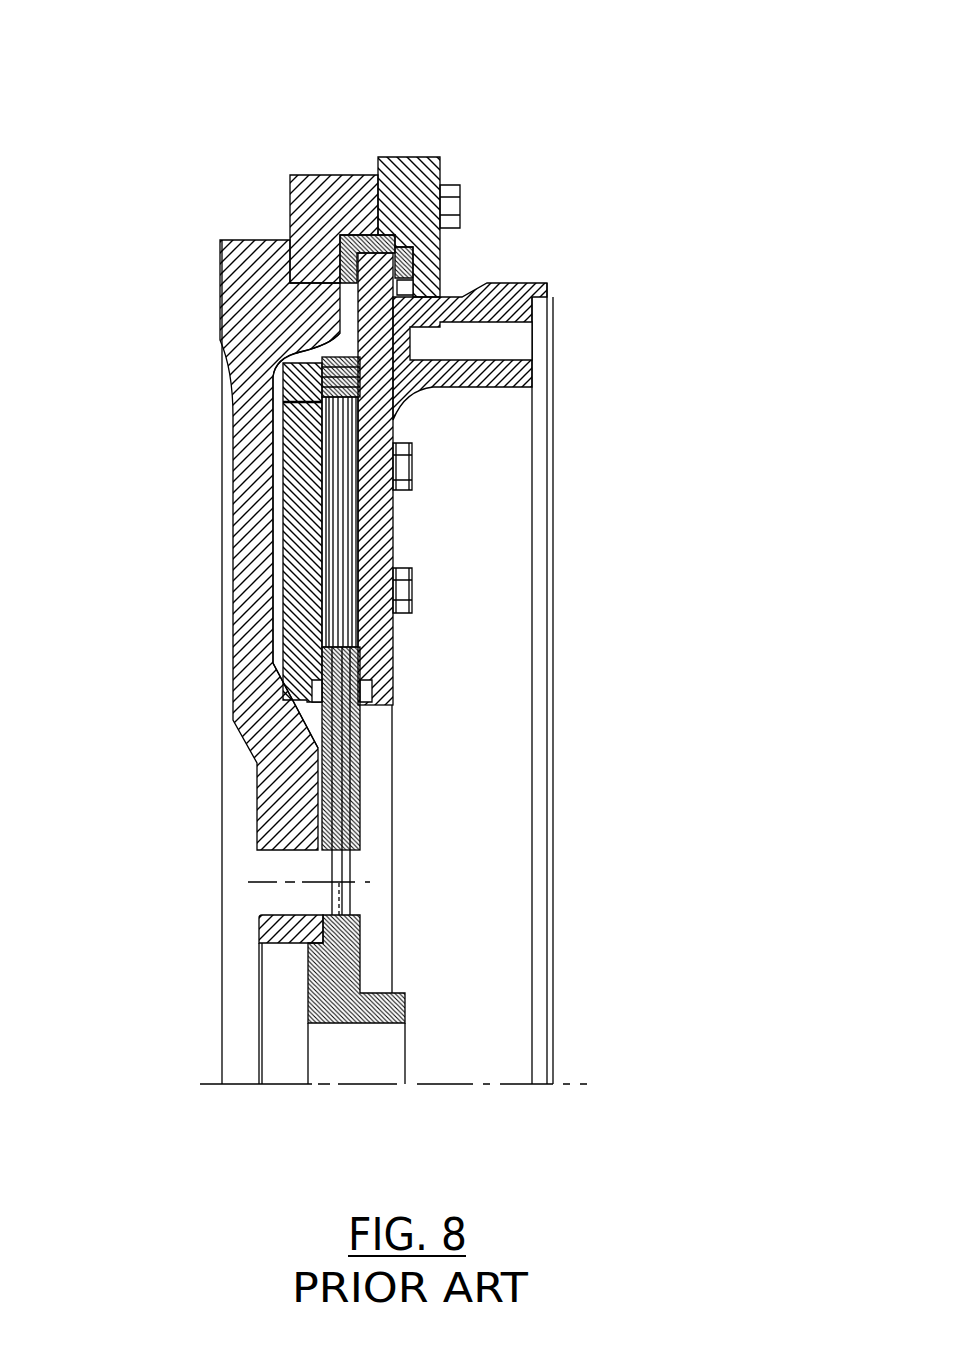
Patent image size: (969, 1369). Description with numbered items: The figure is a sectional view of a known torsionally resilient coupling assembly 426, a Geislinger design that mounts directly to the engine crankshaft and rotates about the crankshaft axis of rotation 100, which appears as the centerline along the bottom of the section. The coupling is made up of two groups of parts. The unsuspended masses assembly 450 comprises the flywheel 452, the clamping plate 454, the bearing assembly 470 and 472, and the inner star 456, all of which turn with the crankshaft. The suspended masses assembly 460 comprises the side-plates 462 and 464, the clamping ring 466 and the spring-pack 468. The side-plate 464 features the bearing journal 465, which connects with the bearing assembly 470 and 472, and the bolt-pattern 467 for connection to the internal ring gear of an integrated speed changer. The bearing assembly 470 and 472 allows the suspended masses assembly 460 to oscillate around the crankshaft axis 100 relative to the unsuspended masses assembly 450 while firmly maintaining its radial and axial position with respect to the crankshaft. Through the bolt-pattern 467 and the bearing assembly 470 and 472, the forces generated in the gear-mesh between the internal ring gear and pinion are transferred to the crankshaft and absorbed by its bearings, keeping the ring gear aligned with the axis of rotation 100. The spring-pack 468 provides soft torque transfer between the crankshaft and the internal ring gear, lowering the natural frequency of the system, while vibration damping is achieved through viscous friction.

The crankshaft axis of rotation 100 is at (243, 1084).
The torsionally resilient coupling assembly 426 is at (250, 54).
The unsuspended masses assembly 450 is at (181, 767).
The flywheel 452 is at (232, 628).
The clamping plate 454 is at (407, 157).
The inner star 456 is at (360, 940).
The suspended masses assembly 460 is at (611, 224).
The side-plate 462 is at (282, 508).
The side-plate 464 is at (393, 642).
The bearing journal 465 is at (520, 331).
The clamping ring 466 is at (305, 250).
The bolt-pattern 467 is at (507, 342).
The spring-pack 468 is at (343, 547).
The bearing assembly 470 is at (337, 355).
The bearing assembly 472 is at (410, 257).